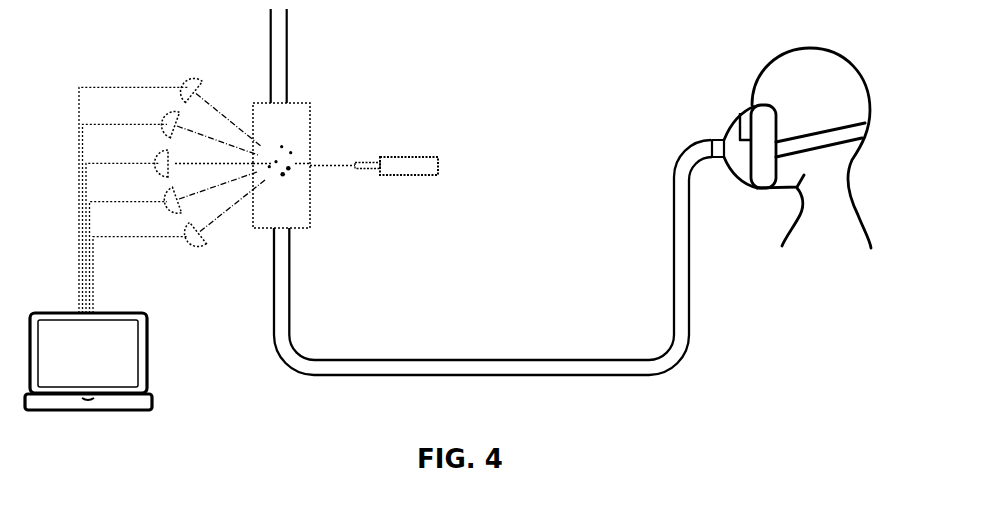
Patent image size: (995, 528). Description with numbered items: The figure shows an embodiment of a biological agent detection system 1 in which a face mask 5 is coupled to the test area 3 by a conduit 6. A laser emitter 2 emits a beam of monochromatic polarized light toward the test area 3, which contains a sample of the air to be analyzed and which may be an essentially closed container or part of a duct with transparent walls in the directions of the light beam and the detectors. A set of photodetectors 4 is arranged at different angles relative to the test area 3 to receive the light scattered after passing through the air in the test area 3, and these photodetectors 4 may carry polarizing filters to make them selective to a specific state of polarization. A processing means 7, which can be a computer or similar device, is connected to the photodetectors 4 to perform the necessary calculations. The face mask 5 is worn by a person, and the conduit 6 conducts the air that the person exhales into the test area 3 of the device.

The system 1 is at (388, 95).
The laser emitter 2 is at (423, 160).
The test area 3 is at (293, 188).
The photodetectors 4 is at (165, 152).
The face mask 5 is at (717, 115).
The conduit 6 is at (520, 350).
The processing means 7 is at (153, 362).